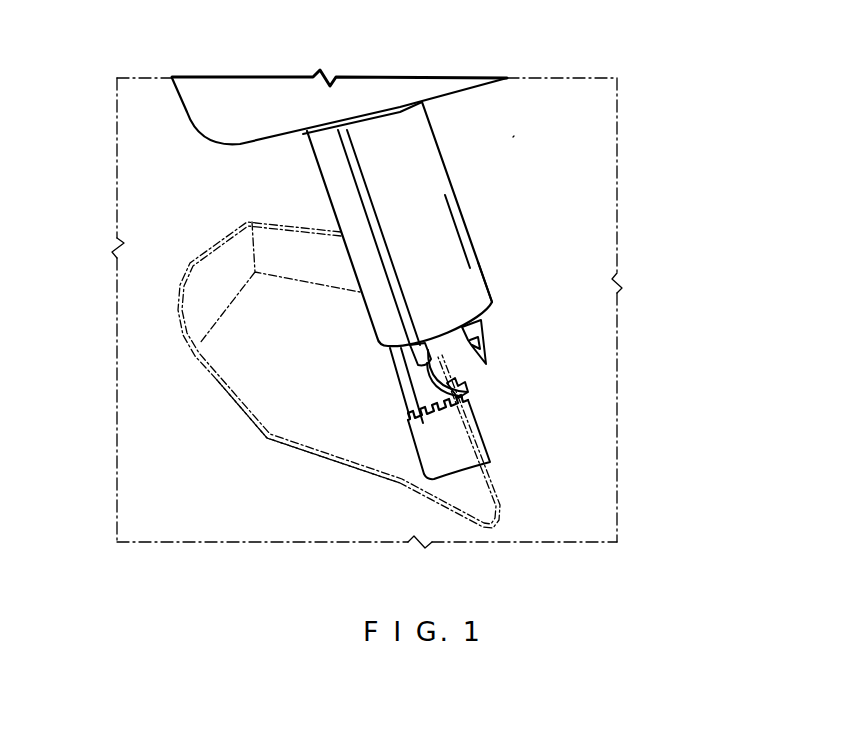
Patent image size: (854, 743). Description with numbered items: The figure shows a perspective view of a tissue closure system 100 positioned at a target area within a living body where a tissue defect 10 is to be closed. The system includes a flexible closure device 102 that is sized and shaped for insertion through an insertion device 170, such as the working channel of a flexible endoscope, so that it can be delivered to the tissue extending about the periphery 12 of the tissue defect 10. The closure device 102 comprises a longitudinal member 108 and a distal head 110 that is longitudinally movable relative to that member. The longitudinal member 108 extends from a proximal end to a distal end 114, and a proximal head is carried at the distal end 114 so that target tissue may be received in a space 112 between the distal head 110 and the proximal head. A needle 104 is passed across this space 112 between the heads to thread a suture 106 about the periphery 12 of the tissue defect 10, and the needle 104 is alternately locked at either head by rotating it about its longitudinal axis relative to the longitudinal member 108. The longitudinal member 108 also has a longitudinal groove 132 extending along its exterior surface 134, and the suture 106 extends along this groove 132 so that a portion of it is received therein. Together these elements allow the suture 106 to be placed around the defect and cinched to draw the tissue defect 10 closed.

The tissue closure system 100 is at (511, 140).
The insertion device 170 is at (187, 113).
The exterior surface 134 is at (437, 194).
The flexible closure device 102 is at (481, 232).
The longitudinal member 108 is at (325, 165).
The longitudinal groove 132 is at (397, 300).
The distal end 114 is at (480, 293).
The needle 104 is at (483, 343).
The suture 106 is at (448, 393).
The distal head 110 is at (468, 462).
The space 112 is at (462, 362).
The tissue defect 10 is at (267, 393).
The periphery 12 is at (267, 440).